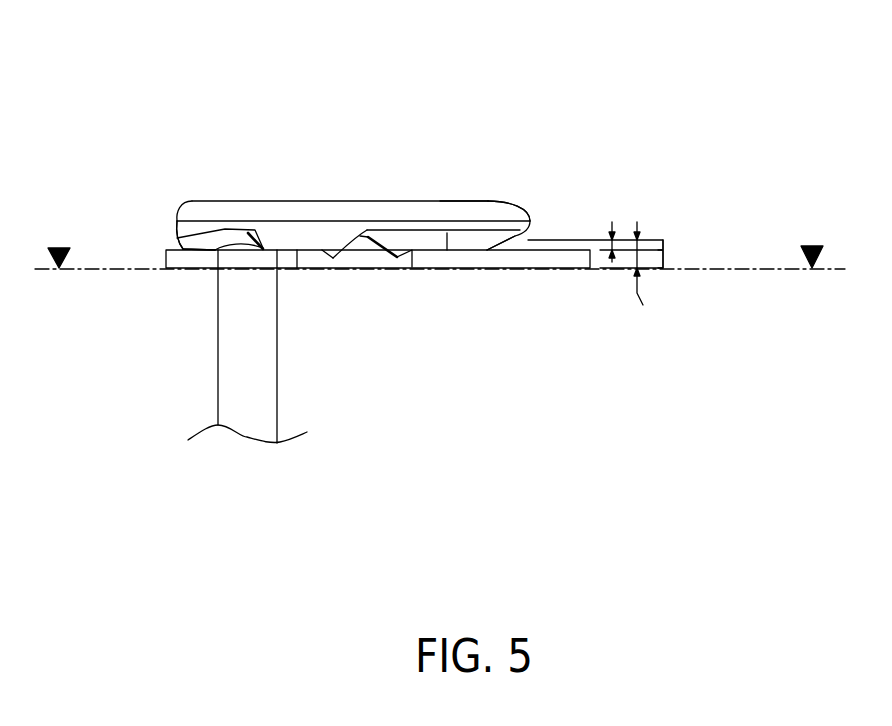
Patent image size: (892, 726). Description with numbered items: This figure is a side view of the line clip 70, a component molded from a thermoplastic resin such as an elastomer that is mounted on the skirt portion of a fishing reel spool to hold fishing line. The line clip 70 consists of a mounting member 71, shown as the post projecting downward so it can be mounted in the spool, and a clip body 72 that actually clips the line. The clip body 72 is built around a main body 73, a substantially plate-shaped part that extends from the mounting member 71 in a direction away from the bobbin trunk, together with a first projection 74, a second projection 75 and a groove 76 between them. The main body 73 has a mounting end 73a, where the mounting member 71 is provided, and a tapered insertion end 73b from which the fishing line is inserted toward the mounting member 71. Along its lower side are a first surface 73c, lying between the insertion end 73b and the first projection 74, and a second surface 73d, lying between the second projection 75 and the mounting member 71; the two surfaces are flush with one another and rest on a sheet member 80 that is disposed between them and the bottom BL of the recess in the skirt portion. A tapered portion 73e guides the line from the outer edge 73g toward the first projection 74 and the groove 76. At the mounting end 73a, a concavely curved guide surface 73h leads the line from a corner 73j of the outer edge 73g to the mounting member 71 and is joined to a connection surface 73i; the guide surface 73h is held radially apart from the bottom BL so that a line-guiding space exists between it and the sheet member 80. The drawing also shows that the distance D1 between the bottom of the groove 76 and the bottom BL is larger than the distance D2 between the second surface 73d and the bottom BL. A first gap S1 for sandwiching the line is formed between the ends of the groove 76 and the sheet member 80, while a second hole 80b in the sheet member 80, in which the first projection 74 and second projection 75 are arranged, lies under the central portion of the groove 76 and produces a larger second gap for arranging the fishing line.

The line clip 70 is at (337, 126).
The mounting member 71 is at (198, 388).
The clip body 72 is at (376, 194).
The main body 73 is at (317, 200).
The mounting end 73a is at (192, 201).
The insertion end 73b is at (502, 200).
The first surface 73c is at (470, 250).
The second surface 73d is at (297, 268).
The tapered portion 73e is at (447, 252).
The outer edge 73g is at (462, 200).
The guide surface 73h is at (197, 243).
The connection surface 73i is at (227, 232).
The corner 73j is at (177, 230).
The first projection 74 is at (395, 257).
The second projection 75 is at (323, 251).
The groove 76 is at (360, 238).
The sheet member 80 is at (570, 262).
The second hole 80b is at (380, 262).
The bottom of the recess BL is at (440, 240).
The first gap S1 is at (623, 228).
The distance D1 is at (701, 250).
The distance D2 is at (640, 281).